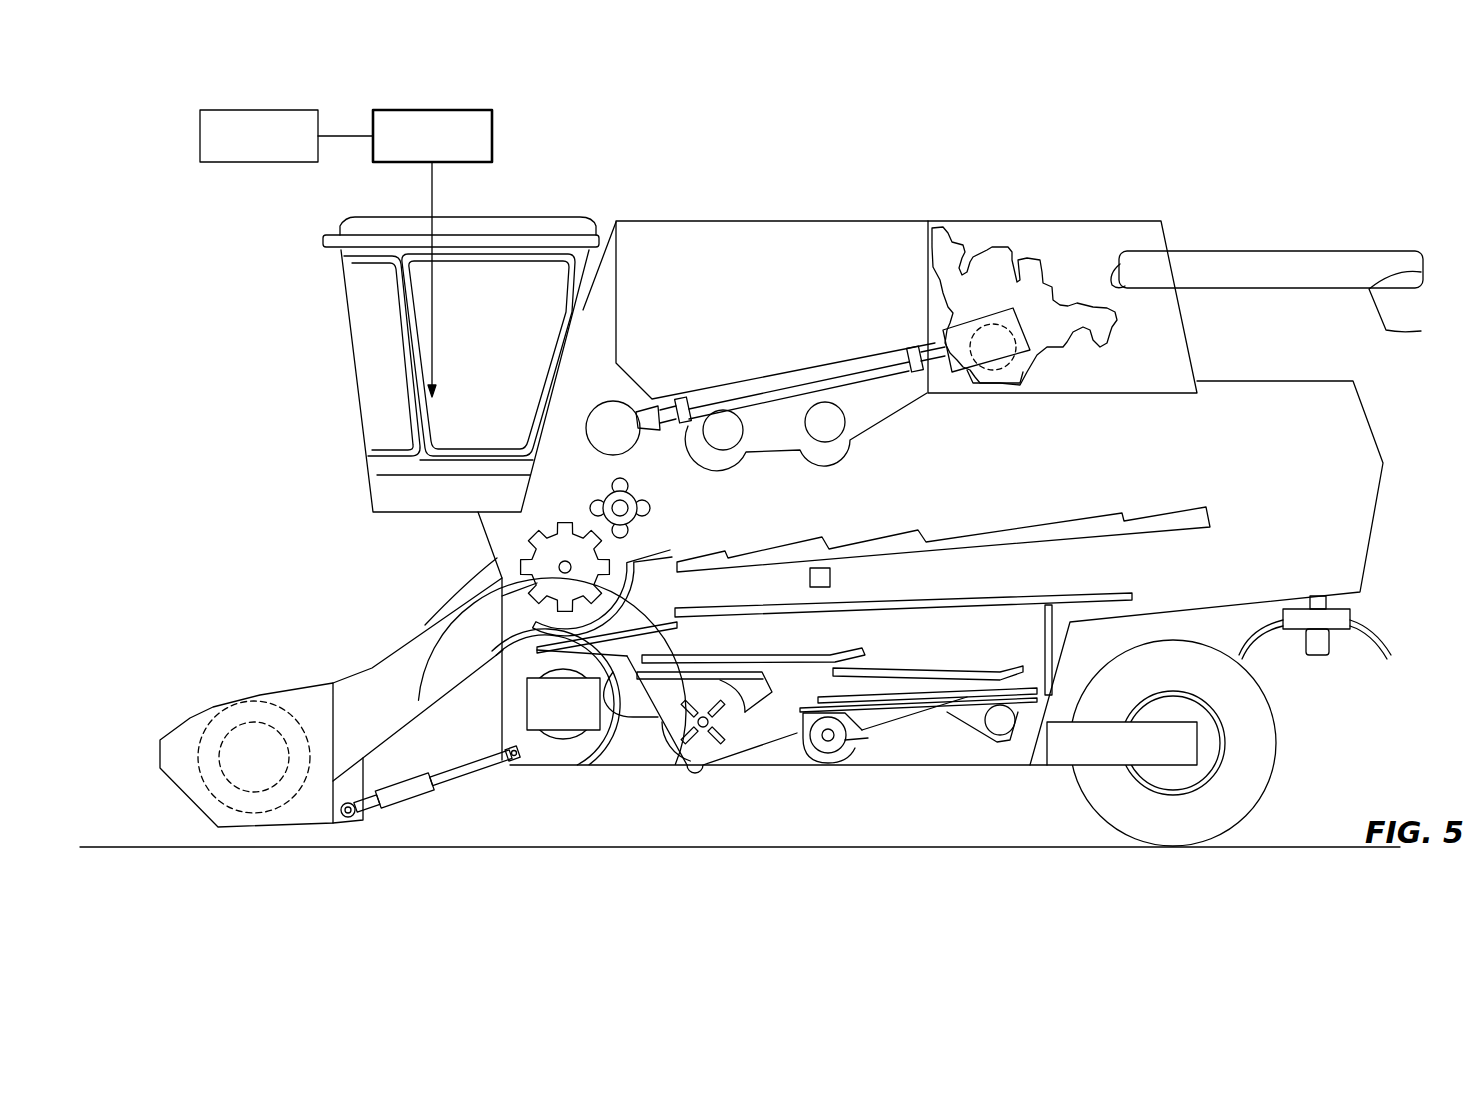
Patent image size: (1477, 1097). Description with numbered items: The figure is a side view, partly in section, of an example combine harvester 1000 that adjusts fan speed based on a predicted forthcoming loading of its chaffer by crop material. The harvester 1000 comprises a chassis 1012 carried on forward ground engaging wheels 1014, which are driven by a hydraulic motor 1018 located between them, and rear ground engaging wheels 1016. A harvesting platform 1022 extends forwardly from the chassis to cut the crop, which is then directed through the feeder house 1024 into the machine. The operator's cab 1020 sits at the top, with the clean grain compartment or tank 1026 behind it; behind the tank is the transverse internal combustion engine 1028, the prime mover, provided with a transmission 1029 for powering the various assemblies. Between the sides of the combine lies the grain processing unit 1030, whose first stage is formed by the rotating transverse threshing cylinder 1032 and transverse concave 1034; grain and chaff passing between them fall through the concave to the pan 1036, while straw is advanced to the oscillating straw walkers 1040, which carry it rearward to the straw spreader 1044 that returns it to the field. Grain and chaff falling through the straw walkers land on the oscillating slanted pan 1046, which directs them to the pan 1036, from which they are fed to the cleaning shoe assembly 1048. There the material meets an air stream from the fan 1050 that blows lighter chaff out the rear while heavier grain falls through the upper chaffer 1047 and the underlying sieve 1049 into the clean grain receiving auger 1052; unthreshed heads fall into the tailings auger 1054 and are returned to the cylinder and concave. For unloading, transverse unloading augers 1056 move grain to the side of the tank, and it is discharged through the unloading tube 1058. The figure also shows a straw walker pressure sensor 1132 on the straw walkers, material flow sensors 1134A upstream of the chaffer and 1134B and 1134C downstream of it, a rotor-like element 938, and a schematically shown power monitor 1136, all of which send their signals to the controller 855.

The harvester 1000 is at (445, 78).
The power monitor 1136 is at (253, 110).
The controller 855 is at (492, 134).
The operator's cab 1020 is at (513, 345).
The clean grain compartment or tank 1026 is at (794, 297).
The transverse internal combustion engine 1028 is at (1012, 240).
The transmission 1029 is at (1015, 350).
The unloading tube 1058 is at (1277, 251).
The transverse unloading augers 1056 is at (822, 440).
The chassis 1012 is at (1379, 457).
The straw spreader 1044 is at (1381, 637).
The ground engaging wheels 1016 is at (1276, 762).
The material flow sensor 1134B is at (1055, 650).
The straw walkers 1040 is at (1150, 515).
The straw walker pressure sensor 1132 is at (830, 577).
The oscillating slanted pan 1046 is at (1115, 592).
The rotor 938 is at (648, 512).
The grain processing unit 1030 is at (495, 541).
The transverse threshing cylinder 1032 is at (520, 606).
The transverse concave 1034 is at (627, 578).
The feeder house 1024 is at (372, 668).
The harvesting platform 1022 is at (310, 688).
The material flow sensor 1134A is at (537, 650).
The forward ground engaging wheels 1014 is at (658, 810).
The hydraulic motor 1018 is at (579, 727).
The chaffer 1047 is at (905, 668).
The cleaning shoe assembly 1048 is at (950, 655).
The pan 1036 is at (798, 663).
The fan 1050 is at (710, 748).
The clean grain receiving auger 1052 is at (832, 745).
The sieve 1049 is at (967, 698).
The tailings auger 1054 is at (998, 740).
The material flow sensor 1134C is at (803, 747).